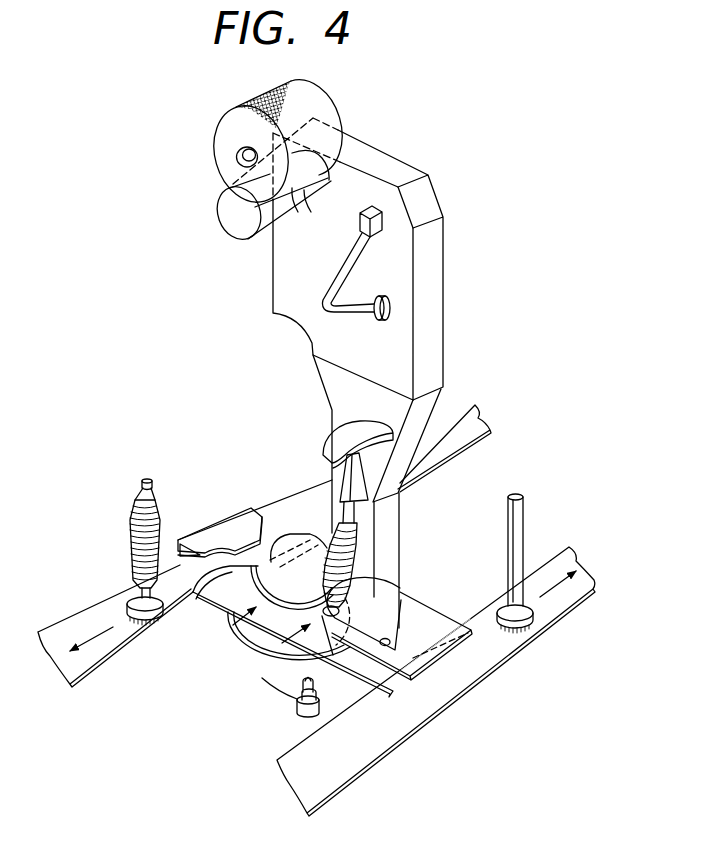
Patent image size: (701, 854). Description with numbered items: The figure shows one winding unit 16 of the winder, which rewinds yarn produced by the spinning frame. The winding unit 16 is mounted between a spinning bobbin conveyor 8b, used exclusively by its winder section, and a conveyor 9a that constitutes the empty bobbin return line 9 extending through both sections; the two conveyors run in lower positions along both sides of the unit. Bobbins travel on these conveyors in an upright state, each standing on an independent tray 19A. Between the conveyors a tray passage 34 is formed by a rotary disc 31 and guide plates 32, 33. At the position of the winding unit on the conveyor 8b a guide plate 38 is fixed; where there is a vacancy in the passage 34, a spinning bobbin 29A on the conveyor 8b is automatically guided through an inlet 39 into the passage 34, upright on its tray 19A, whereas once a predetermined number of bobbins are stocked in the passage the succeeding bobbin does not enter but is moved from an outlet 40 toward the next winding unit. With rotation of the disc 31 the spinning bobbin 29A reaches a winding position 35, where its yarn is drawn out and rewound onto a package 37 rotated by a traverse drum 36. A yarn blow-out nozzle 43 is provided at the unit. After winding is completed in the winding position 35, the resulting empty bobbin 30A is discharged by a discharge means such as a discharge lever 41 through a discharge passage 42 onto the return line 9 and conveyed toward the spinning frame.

The winding unit 16 is at (464, 303).
The package 37 is at (236, 148).
The traverse drum 36 is at (236, 223).
The spinning bobbin conveyor 8b is at (107, 607).
The empty bobbin return line 9 is at (453, 713).
The conveyor 9a is at (470, 665).
The guide plate 38 is at (237, 525).
The outlet 40 is at (210, 558).
The inlet 39 is at (271, 540).
The guide plate 32 is at (285, 568).
The guide plate 33 is at (240, 603).
The tray passage 34 is at (238, 634).
The rotary disc 31 is at (262, 647).
The winding position 35 is at (268, 633).
The discharge lever 41 is at (393, 602).
The discharge passage 42 is at (373, 665).
The yarn blow-out nozzle 43 is at (317, 713).
The spinning bobbin 29A is at (146, 502).
The empty bobbin 30A is at (524, 537).
The tray 19A is at (143, 620).